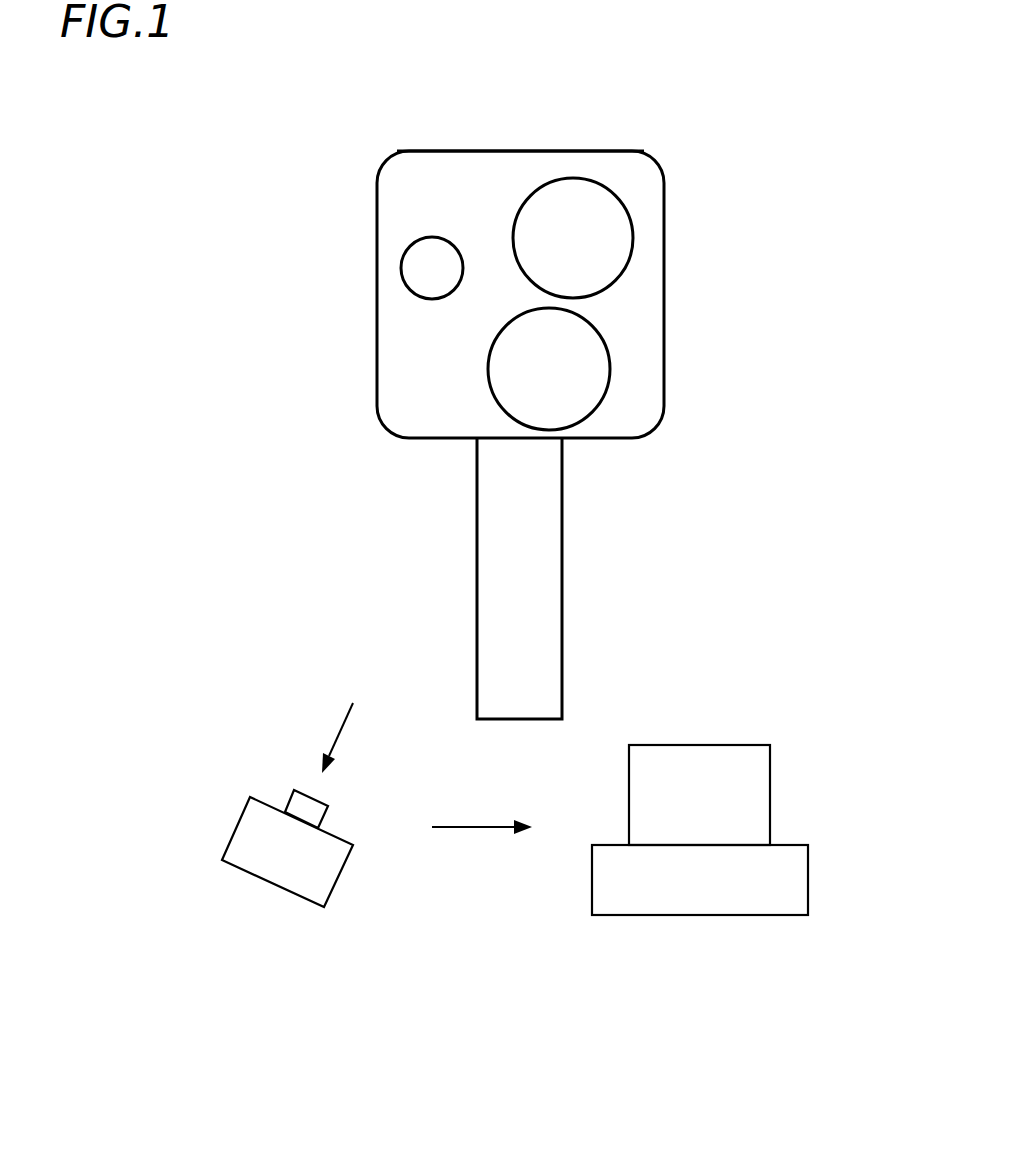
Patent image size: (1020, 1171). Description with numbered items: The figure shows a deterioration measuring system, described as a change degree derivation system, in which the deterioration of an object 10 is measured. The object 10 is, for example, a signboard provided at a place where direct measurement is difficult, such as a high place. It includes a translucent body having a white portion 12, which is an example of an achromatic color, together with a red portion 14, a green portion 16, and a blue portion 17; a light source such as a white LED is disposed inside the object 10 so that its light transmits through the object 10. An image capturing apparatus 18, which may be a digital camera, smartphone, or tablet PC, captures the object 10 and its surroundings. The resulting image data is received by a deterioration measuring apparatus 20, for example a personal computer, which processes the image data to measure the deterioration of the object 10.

The object 10 is at (672, 252).
The white portion 12 is at (498, 170).
The red portion 14 is at (418, 268).
The green portion 16 is at (572, 187).
The blue portion 17 is at (598, 372).
The image capturing apparatus 18 is at (295, 878).
The deterioration measuring apparatus 20 is at (700, 900).